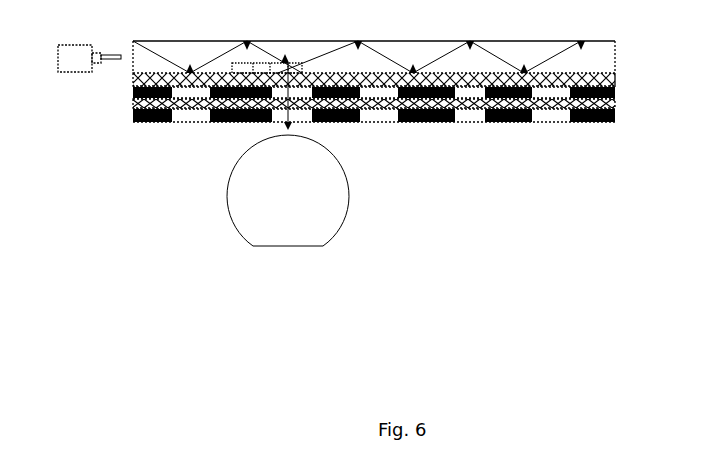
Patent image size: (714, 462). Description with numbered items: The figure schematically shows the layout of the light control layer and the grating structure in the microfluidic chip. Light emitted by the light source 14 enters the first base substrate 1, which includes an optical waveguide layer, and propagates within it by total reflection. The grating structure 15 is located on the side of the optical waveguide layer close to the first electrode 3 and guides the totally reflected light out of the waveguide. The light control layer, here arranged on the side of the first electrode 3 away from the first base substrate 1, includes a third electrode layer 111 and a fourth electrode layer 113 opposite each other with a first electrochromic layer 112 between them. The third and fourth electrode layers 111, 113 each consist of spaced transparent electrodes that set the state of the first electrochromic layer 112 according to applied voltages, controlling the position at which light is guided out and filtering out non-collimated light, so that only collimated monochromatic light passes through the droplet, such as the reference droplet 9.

The first base substrate 1 is at (605, 48).
The first electrode 3 is at (613, 80).
The reference droplet 9 is at (288, 170).
The light source 14 is at (73, 59).
The grating structure 15 is at (208, 100).
The third electrode layer 111 is at (620, 93).
The first electrochromic layer 112 is at (620, 102).
The fourth electrode layer 113 is at (620, 112).